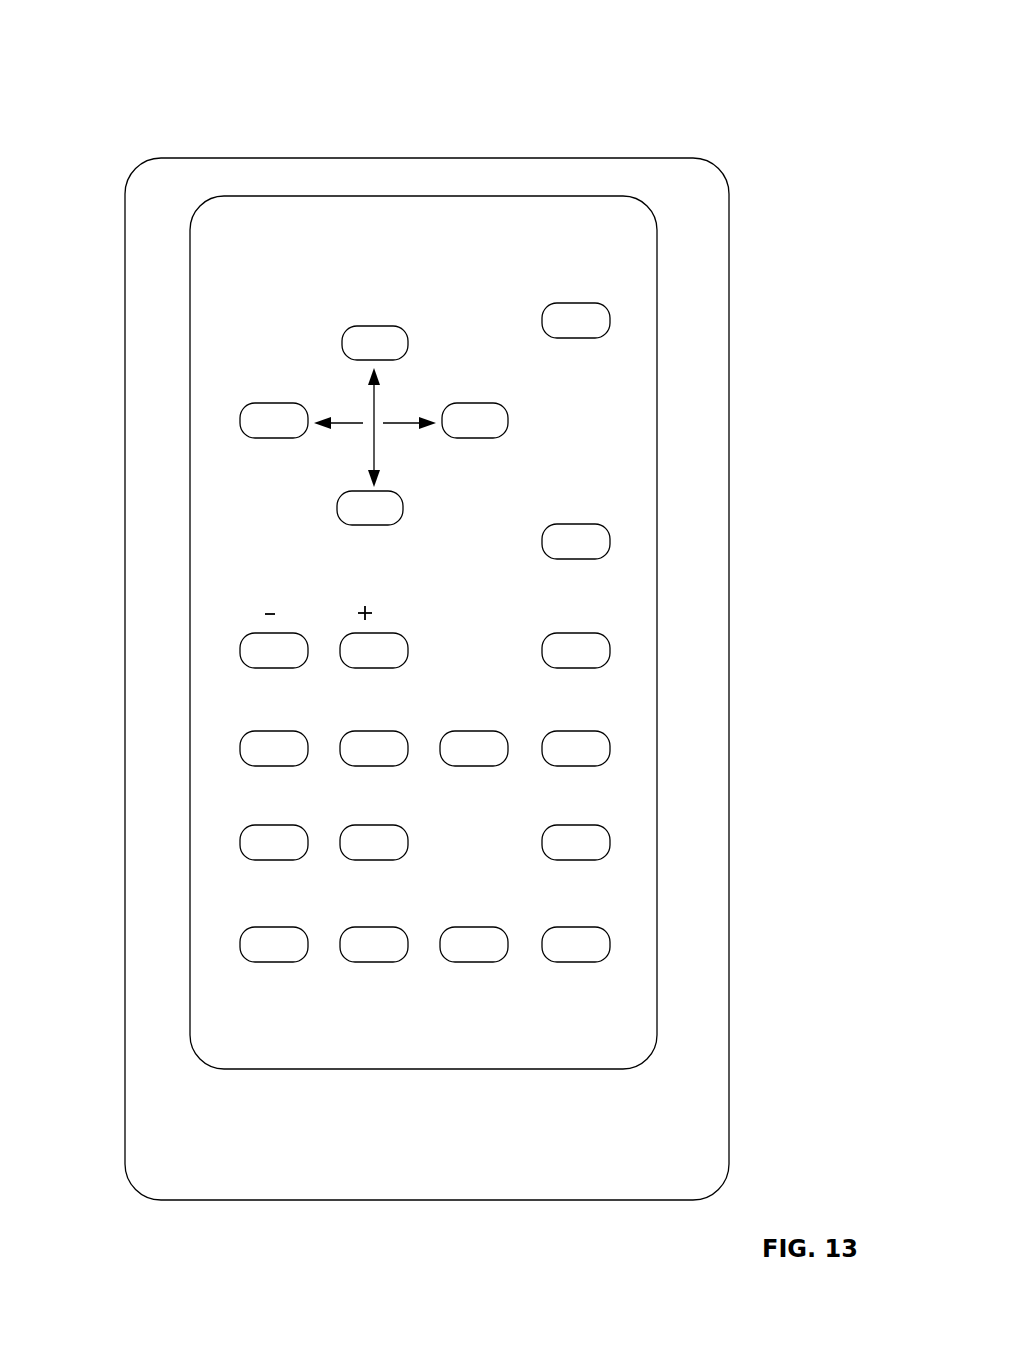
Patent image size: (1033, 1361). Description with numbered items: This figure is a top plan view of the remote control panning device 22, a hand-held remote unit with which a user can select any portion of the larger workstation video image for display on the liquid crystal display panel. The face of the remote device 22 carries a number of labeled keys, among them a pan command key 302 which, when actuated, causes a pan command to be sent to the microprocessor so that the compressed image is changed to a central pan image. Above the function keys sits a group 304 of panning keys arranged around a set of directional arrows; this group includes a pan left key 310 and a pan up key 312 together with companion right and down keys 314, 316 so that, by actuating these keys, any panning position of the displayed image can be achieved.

The remote control panning device 22 is at (784, 215).
The pan command key 302 is at (610, 943).
The group of panning keys 304 is at (562, 427).
The pan left key 310 is at (265, 402).
The pan up key 312 is at (467, 404).
The up cursor key 314 is at (365, 328).
The down cursor key 316 is at (337, 513).